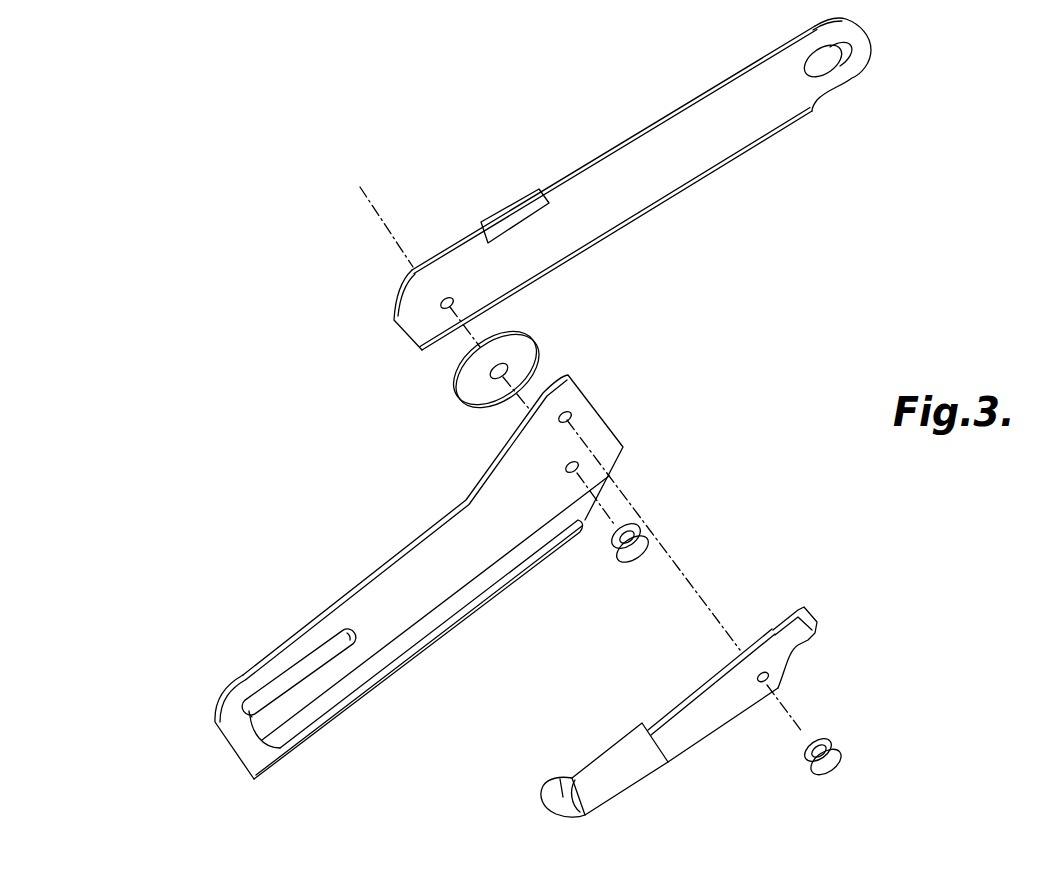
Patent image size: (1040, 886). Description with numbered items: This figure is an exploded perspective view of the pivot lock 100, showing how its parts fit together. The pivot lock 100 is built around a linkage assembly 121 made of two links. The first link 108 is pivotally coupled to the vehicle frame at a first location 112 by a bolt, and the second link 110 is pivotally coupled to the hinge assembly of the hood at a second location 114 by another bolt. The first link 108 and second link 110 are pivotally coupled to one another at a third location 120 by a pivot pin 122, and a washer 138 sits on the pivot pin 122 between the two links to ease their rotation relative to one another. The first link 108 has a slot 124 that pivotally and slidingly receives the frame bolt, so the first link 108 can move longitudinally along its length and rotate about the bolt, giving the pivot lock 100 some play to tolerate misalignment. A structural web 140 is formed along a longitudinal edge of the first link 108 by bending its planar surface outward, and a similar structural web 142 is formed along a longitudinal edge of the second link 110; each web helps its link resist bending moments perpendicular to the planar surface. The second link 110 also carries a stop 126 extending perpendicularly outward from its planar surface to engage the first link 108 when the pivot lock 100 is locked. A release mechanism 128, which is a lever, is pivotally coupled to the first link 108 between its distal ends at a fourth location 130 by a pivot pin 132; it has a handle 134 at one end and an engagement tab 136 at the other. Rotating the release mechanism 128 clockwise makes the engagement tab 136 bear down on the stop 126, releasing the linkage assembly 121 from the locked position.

The pivot lock 100 is at (265, 266).
The first link 108 is at (245, 738).
The second link 110 is at (645, 190).
The first location 112 is at (300, 673).
The second location 114 is at (828, 62).
The third location 120 is at (505, 398).
The linkage assembly 121 is at (433, 217).
The pivot pin 122 is at (630, 558).
The slot 124 is at (293, 745).
The stop 126 is at (521, 206).
The release mechanism 128 is at (703, 745).
The fourth location 130 is at (688, 575).
The pivot pin 132 is at (838, 762).
The handle 134 is at (583, 816).
The engagement tab 136 is at (816, 614).
The washer 138 is at (537, 348).
The structural web 140 is at (430, 647).
The structural web 142 is at (588, 245).